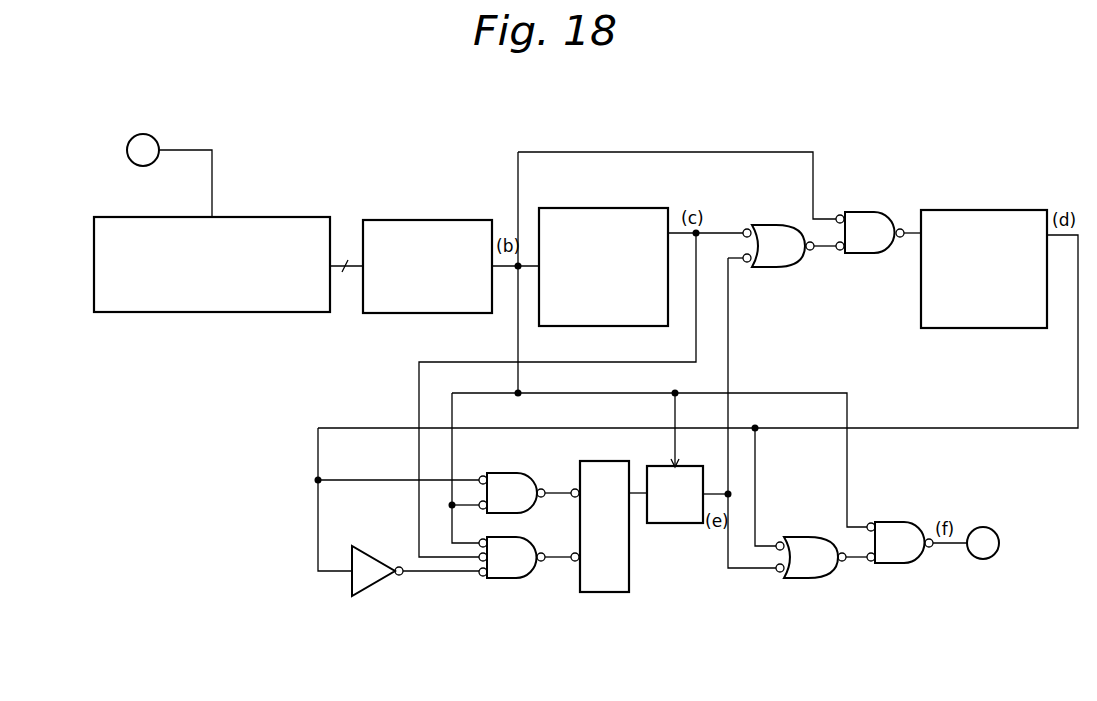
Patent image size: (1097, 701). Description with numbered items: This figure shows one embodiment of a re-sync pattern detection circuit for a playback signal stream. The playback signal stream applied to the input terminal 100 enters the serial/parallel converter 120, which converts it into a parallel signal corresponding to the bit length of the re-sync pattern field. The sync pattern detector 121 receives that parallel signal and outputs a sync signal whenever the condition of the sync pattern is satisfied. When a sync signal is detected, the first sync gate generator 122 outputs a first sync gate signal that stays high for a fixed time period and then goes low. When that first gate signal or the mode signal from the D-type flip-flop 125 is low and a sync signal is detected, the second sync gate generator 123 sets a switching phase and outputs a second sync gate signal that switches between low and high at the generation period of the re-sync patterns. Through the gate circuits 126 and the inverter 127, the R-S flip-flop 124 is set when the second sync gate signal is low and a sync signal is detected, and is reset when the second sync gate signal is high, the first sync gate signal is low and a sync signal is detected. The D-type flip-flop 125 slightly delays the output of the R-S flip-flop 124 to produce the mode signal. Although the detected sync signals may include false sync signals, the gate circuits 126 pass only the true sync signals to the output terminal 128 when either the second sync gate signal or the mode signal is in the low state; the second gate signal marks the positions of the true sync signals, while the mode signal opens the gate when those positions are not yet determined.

The input terminal 100 is at (143, 134).
The serial/parallel converter 120 is at (277, 216).
The sync pattern detector 121 is at (435, 219).
The first sync gate generator 122 is at (611, 207).
The second sync gate generator 123 is at (988, 209).
The R-S flip-flop 124 is at (598, 593).
The D-type flip-flop 125 is at (666, 524).
The gate circuits 126 is at (780, 268).
The inverter 127 is at (368, 595).
The output terminal 128 is at (983, 559).